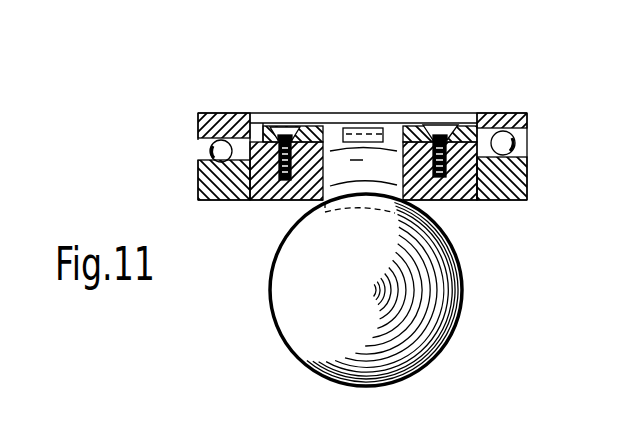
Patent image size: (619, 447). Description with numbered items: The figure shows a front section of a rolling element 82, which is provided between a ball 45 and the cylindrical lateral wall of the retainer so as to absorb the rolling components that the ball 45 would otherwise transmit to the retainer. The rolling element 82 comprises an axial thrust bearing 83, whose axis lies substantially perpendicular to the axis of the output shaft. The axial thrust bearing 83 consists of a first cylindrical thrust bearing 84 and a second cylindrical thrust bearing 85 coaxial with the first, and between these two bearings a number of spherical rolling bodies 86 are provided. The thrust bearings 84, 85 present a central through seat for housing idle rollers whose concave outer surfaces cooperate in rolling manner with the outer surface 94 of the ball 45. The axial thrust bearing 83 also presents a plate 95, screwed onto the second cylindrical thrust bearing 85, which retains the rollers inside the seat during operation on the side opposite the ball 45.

The rolling element 82 is at (522, 86).
The axial thrust bearing 83 is at (184, 175).
The first cylindrical thrust bearing 84 is at (198, 131).
The second cylindrical thrust bearing 85 is at (235, 202).
The spherical rolling bodies 86 is at (210, 149).
The outer surface 94 is at (463, 290).
The plate 95 is at (398, 125).
The ball 45 is at (407, 340).